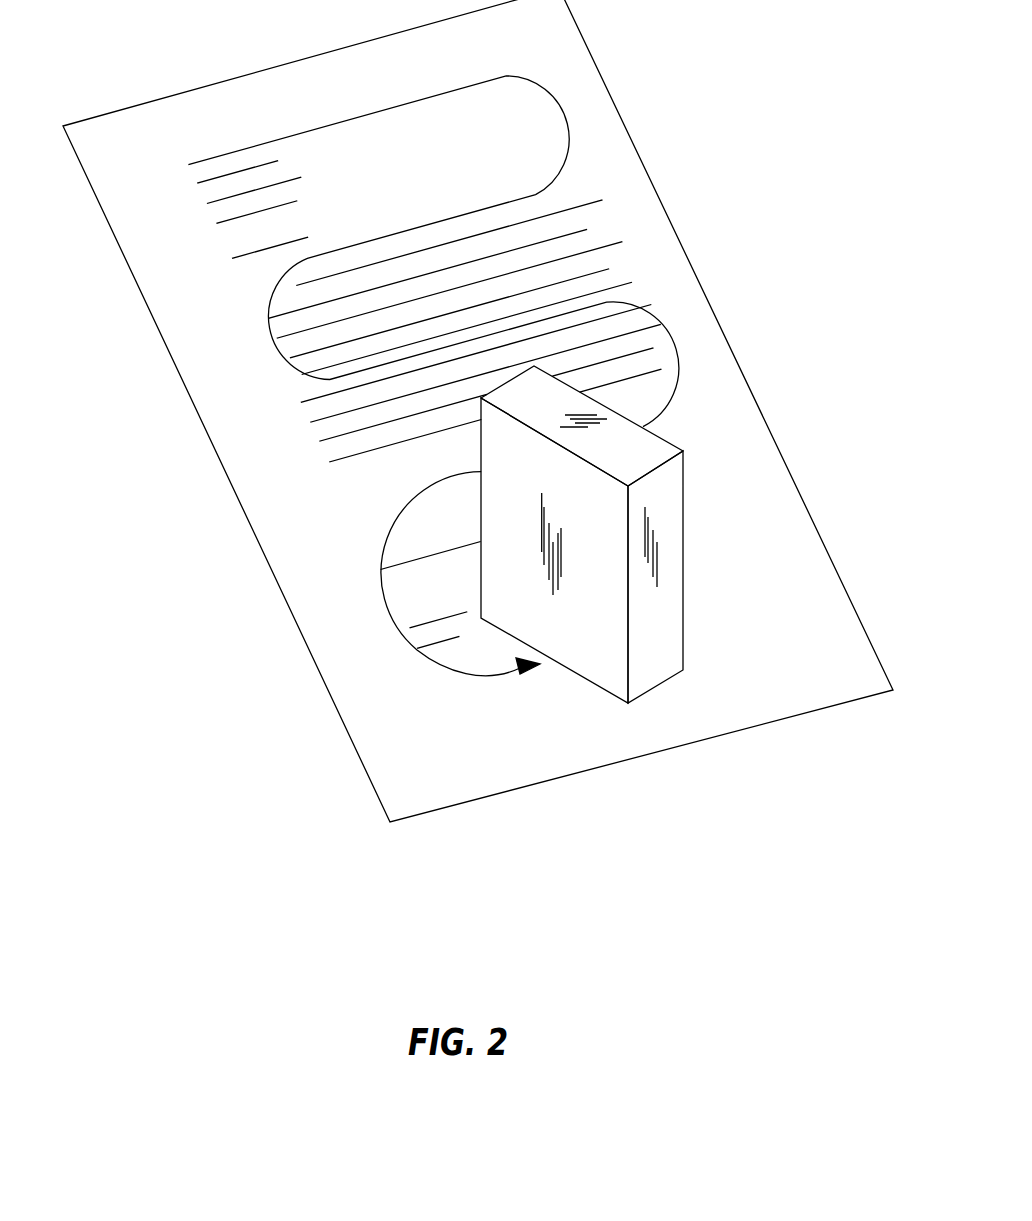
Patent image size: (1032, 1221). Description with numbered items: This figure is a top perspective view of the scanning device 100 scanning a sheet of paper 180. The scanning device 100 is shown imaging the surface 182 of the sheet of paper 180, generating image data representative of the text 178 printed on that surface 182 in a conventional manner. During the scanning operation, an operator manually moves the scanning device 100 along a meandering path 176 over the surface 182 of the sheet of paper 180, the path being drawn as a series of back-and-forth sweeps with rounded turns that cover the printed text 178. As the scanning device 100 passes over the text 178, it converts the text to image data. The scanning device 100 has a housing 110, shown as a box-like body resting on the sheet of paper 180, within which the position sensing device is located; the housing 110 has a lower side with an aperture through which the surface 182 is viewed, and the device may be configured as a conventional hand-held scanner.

The scanning device 100 is at (706, 526).
The housing 110 is at (668, 637).
The meandering path 176 is at (562, 113).
The text 178 is at (367, 452).
The sheet of paper 180 is at (738, 338).
The surface 182 is at (430, 177).